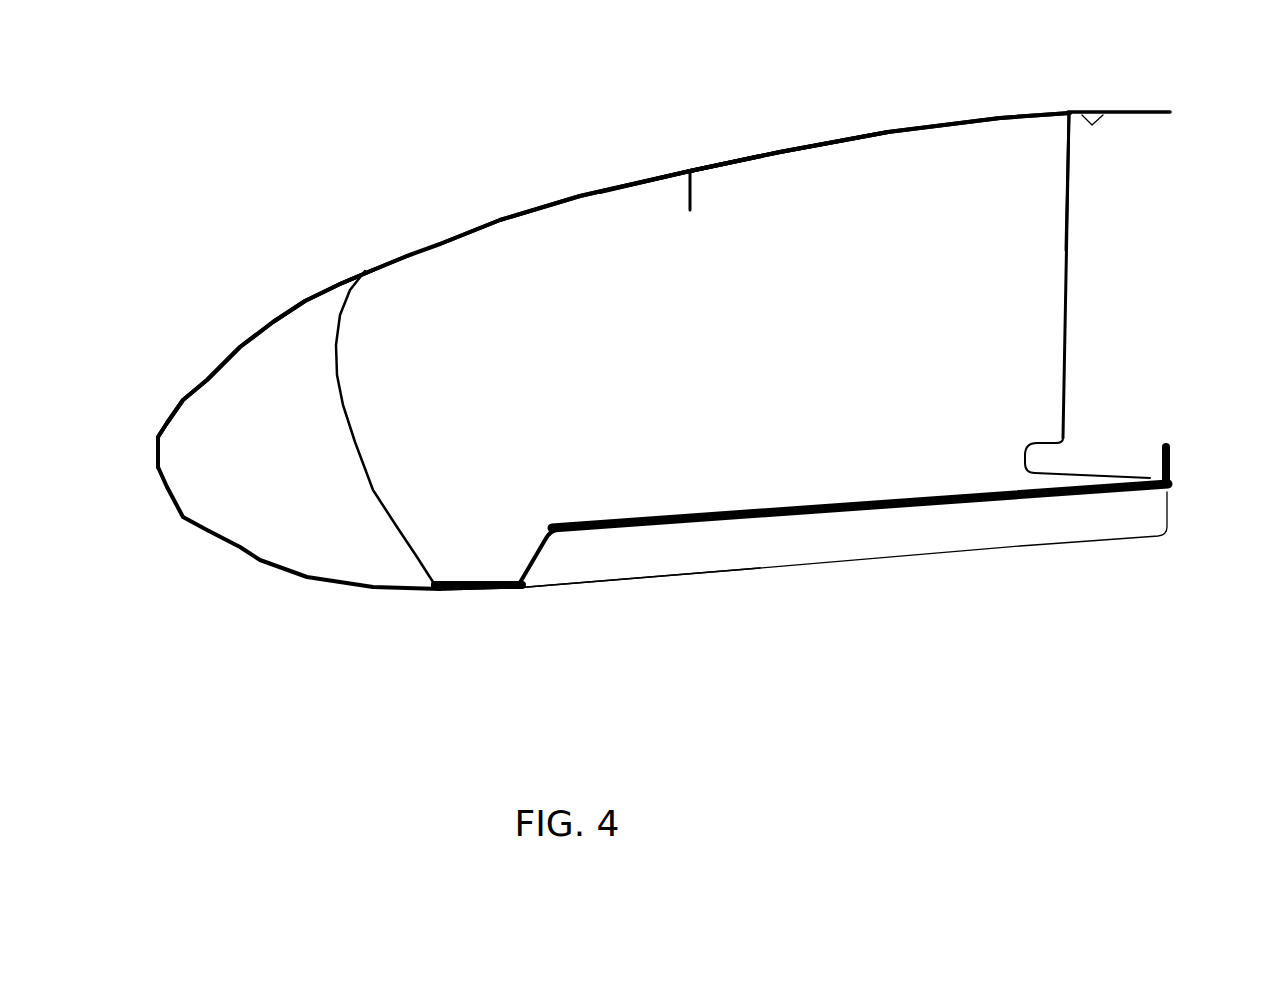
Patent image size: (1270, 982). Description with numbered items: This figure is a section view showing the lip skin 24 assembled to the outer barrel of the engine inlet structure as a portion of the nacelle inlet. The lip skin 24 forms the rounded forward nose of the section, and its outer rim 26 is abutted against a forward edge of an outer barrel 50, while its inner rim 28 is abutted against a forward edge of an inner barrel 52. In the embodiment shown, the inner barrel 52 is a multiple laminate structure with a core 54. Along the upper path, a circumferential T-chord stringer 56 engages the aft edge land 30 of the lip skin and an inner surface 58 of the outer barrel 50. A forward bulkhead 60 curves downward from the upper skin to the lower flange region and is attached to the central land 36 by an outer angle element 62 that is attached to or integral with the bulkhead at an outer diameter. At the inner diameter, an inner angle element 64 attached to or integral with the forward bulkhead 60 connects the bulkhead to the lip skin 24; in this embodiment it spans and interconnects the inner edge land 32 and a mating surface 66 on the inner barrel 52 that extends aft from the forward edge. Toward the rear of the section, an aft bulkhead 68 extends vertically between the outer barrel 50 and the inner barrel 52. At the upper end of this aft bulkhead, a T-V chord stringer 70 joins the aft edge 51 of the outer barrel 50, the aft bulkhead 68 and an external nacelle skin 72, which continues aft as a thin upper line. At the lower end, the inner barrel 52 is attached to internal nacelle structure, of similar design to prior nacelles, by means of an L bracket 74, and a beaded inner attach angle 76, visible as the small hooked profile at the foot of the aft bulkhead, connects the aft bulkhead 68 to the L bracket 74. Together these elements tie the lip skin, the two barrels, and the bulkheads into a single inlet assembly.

The lip skin 24 is at (417, 247).
The outer rim 26 is at (695, 168).
The inner rim 28 is at (478, 592).
The aft edge land 30 is at (670, 173).
The inner edge land 32 is at (447, 592).
The central land 36 is at (363, 270).
The outer barrel 50 is at (887, 133).
The aft edge 51 is at (1072, 118).
The inner barrel 52 is at (912, 555).
The core 54 is at (798, 530).
The circumferential T-chord stringer 56 is at (688, 202).
The inner surface 58 is at (762, 160).
The forward bulkhead 60 is at (357, 443).
The outer angle element 62 is at (368, 275).
The inner angle element 64 is at (463, 583).
The mating surface 66 is at (508, 580).
The aft bulkhead 68 is at (1070, 230).
The T-V chord stringer 70 is at (1072, 137).
The external nacelle skin 72 is at (1143, 112).
The L bracket 74 is at (1172, 466).
The beaded inner attach angle 76 is at (1027, 460).